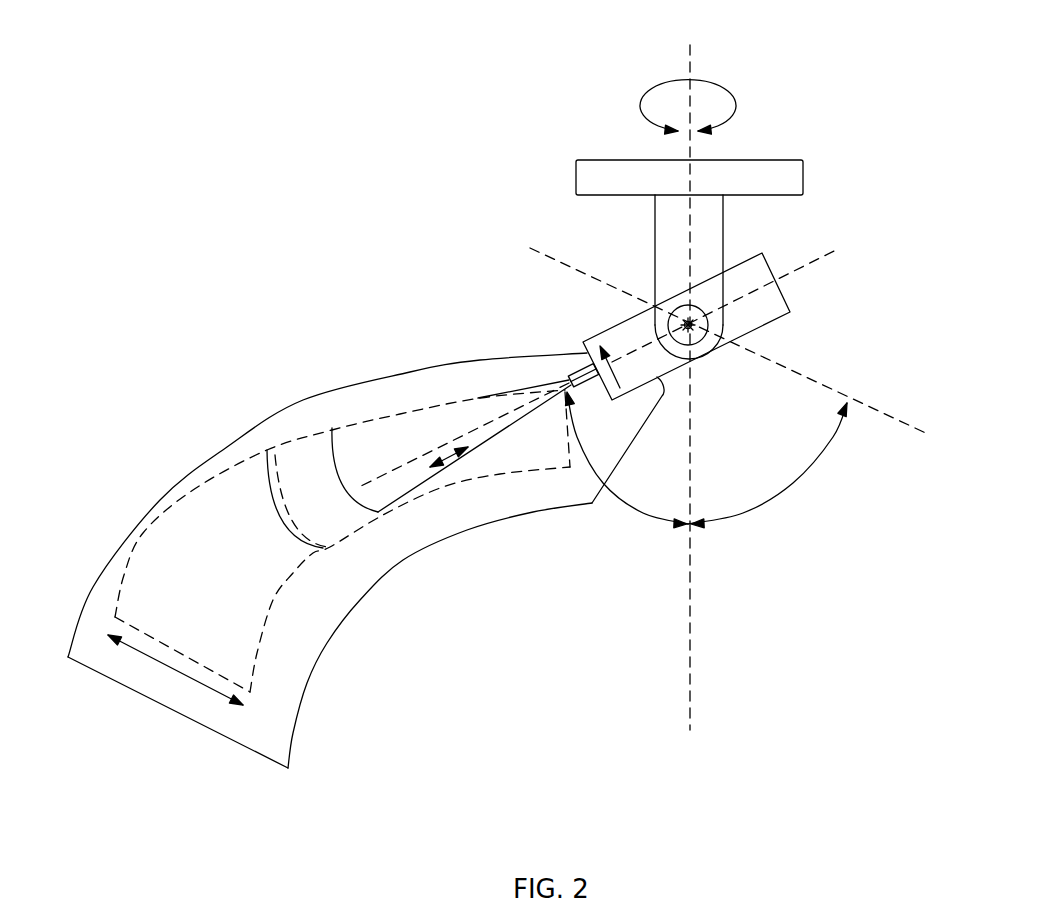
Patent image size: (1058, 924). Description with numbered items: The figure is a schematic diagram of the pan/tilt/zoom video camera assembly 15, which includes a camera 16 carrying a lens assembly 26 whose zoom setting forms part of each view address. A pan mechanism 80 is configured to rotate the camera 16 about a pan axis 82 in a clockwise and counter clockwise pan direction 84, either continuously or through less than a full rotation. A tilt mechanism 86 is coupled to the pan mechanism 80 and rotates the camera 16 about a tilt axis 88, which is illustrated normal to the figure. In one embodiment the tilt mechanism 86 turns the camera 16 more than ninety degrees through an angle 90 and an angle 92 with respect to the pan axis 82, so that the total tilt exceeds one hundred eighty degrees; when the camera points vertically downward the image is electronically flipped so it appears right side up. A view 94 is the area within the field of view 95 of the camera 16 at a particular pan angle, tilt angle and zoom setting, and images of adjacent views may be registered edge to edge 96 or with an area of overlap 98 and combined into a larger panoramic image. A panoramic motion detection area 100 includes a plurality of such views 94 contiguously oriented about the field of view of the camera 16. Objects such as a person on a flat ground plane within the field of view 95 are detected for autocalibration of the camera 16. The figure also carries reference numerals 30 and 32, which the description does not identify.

The pan/tilt/zoom video camera assembly 15 is at (525, 83).
The camera 16 is at (786, 314).
The lens assembly 26 is at (580, 378).
The direction of workpiece travel 30 is at (160, 664).
The scan direction 32 is at (457, 453).
The pan mechanism 80 is at (803, 172).
The pan axis 82 is at (692, 153).
The pan direction 84 is at (733, 99).
The tilt mechanism 86 is at (690, 332).
The tilt axis 88 is at (675, 307).
The angle 90 is at (633, 513).
The angle 92 is at (772, 508).
The view 94 is at (342, 541).
The field of view 95 is at (478, 399).
The edge to edge 96 is at (333, 445).
The area of overlap 98 is at (280, 518).
The panoramic motion detection area 100 is at (294, 733).